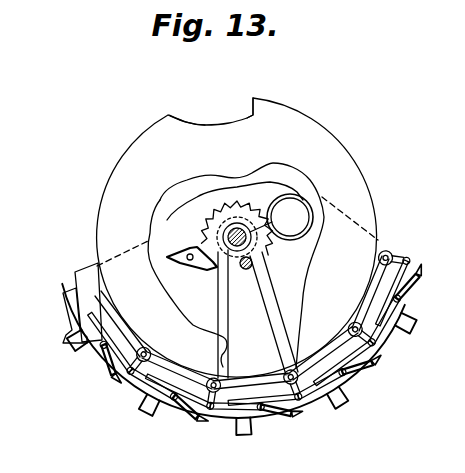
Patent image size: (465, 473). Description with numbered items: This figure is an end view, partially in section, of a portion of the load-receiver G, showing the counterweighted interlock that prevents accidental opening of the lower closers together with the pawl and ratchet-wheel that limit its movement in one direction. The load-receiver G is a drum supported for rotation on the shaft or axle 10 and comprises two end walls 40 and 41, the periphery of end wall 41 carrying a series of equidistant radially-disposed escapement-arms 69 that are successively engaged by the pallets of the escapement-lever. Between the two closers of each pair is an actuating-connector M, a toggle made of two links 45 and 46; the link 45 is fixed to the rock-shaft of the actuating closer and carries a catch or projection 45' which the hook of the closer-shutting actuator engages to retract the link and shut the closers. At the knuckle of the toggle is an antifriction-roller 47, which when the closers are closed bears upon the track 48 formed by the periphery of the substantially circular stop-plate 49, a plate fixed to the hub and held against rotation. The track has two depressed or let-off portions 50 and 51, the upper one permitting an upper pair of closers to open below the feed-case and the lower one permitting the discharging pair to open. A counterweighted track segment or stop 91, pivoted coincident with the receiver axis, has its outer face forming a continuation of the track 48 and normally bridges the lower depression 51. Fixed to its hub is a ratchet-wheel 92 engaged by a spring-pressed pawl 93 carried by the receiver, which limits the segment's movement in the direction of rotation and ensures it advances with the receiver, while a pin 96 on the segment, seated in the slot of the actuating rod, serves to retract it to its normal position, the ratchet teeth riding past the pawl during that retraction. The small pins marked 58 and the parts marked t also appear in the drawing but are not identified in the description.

The shaft or axle 10 is at (228, 236).
The end wall 40 is at (92, 275).
The end wall 41 is at (65, 294).
The link 45 is at (242, 341).
The catch or projection 45' is at (248, 341).
The link 46 is at (108, 318).
The antifriction-roller 47 is at (147, 352).
The track 48 is at (135, 140).
The stop-plate 49 is at (237, 237).
The depressed or let-off portion 50 is at (255, 113).
The depressed or let-off portion 51 is at (222, 362).
The pin 58 is at (112, 368).
The escapement-arm 69 is at (63, 338).
The counterweighted track segment or stop 91 is at (270, 306).
The ratchet-wheel 92 is at (232, 205).
The spring-pressed pawl 93 is at (196, 268).
The pin 96 is at (258, 260).
The load-receiver G is at (220, 231).
The actuating-connector M is at (124, 332).
The tip t is at (100, 350).